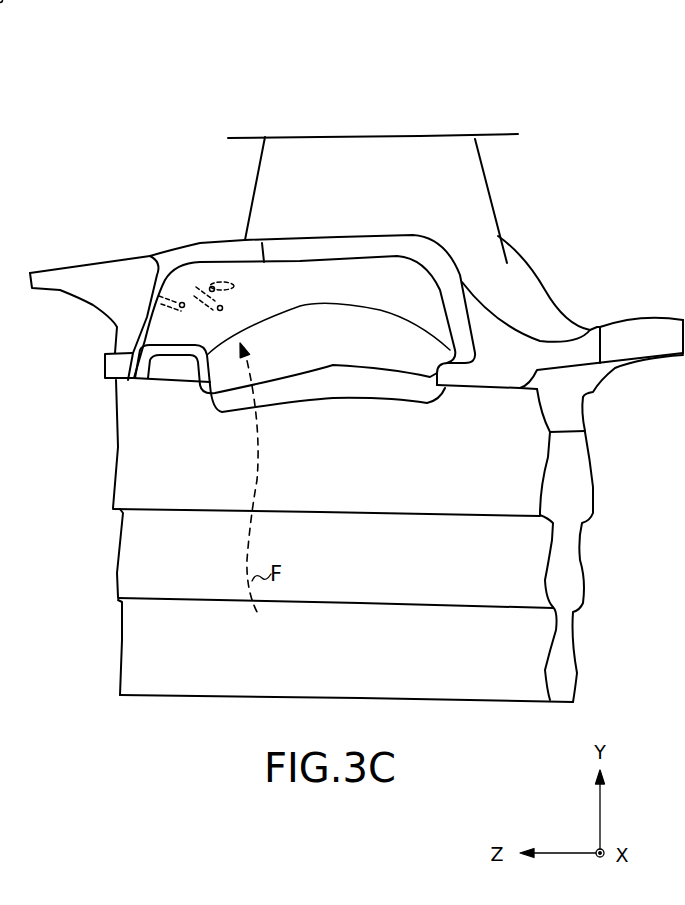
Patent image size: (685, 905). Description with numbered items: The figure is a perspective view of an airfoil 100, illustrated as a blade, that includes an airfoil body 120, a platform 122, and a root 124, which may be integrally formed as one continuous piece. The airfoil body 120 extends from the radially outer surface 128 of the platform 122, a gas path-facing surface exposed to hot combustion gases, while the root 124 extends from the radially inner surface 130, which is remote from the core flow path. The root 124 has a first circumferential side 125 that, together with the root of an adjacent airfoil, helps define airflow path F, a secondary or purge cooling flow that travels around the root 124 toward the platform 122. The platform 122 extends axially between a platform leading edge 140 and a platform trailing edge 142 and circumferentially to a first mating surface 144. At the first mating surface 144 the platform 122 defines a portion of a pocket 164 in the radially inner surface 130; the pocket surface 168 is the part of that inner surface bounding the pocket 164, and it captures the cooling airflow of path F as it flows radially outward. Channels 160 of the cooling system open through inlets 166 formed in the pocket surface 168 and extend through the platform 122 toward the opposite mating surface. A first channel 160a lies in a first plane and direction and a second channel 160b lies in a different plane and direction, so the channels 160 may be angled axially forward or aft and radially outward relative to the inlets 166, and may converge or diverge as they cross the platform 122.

The airfoil 100 is at (88, 103).
The airfoil body 120 is at (350, 194).
The platform 122 is at (625, 415).
The root 124 is at (172, 562).
The first circumferential side 125 is at (359, 572).
The radially outer surface 128 is at (537, 317).
The radially inner surface 130 is at (478, 390).
The platform leading edge 140 is at (642, 333).
The platform trailing edge 142 is at (30, 277).
The first mating surface 144 is at (487, 369).
The channels 160 is at (231, 168).
The first channel 160a is at (160, 298).
The second channel 160b is at (210, 288).
The pocket 164 is at (263, 243).
The inlet 166 is at (222, 308).
The pocket surface 168 is at (359, 300).